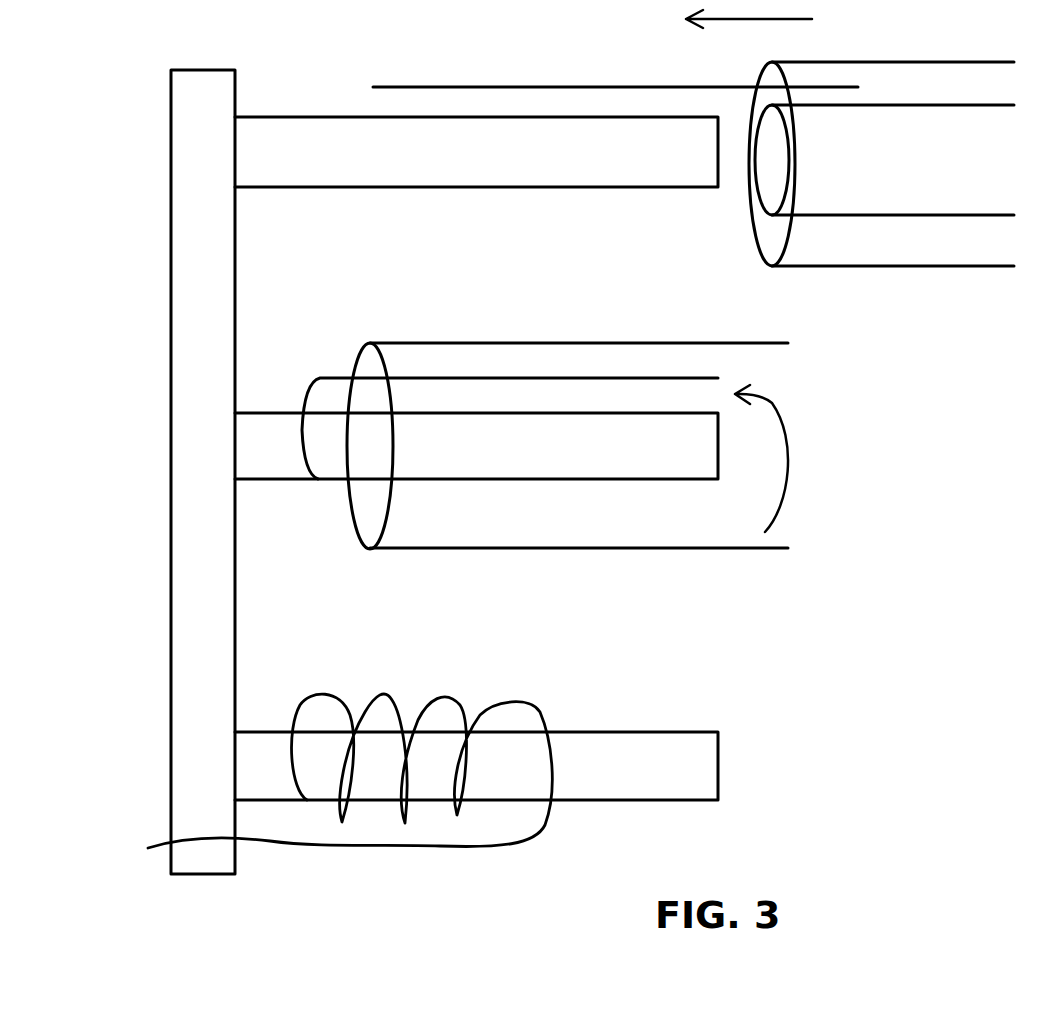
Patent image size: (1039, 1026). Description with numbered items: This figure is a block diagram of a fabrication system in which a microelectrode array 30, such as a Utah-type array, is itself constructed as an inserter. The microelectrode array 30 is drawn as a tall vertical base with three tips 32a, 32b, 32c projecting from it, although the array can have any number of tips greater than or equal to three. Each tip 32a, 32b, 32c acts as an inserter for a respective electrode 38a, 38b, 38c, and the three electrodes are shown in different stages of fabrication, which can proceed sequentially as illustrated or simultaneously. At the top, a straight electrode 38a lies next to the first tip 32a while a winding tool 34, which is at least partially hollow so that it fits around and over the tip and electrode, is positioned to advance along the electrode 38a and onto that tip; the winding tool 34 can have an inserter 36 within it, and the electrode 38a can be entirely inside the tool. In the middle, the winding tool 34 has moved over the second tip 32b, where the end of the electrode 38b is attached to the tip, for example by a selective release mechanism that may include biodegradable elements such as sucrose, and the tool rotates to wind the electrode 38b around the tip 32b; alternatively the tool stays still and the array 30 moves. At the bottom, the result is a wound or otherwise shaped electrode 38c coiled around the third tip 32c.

The microelectrode array 30 is at (200, 70).
The tip 32a is at (400, 187).
The tip 32b is at (258, 479).
The tip 32c is at (645, 732).
The winding tool 34 is at (920, 266).
The inner tube 36 is at (905, 105).
The electrode 38a is at (560, 87).
The electrode 38b is at (330, 378).
The electrode 38c is at (525, 698).